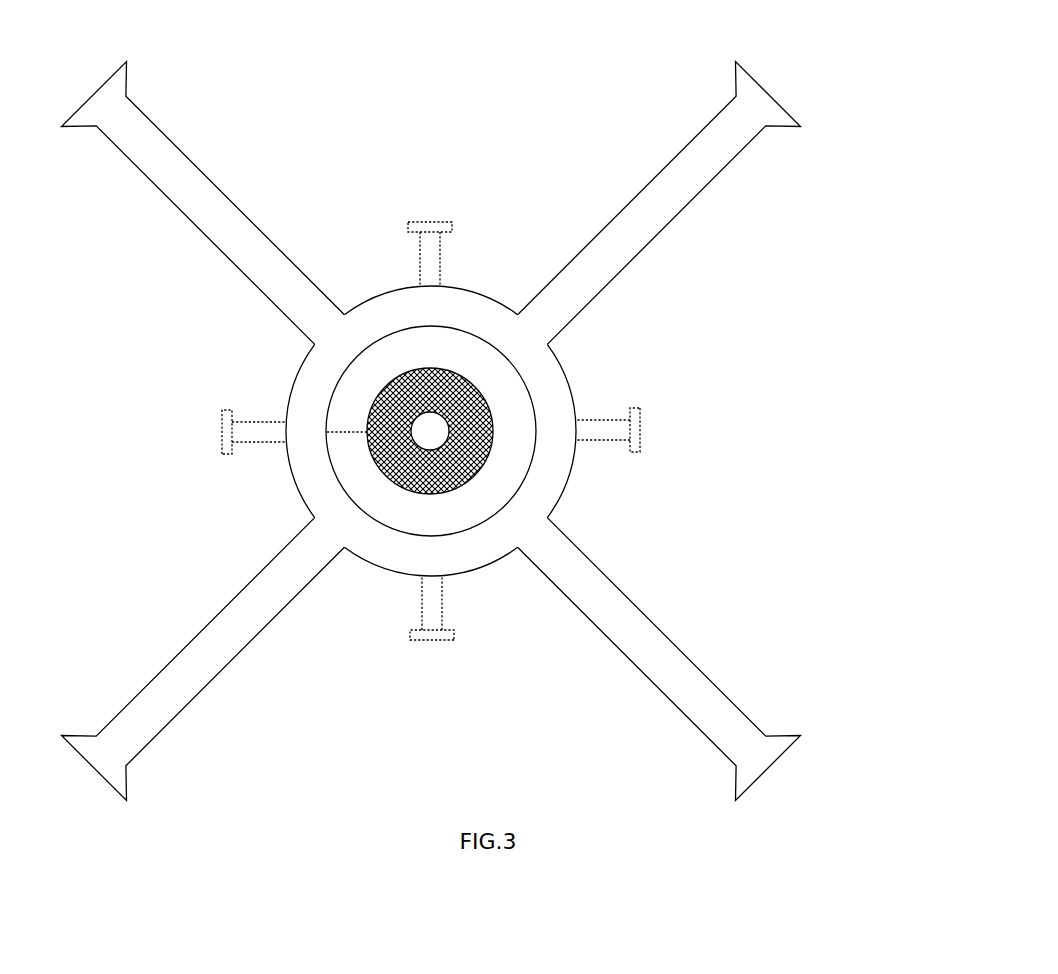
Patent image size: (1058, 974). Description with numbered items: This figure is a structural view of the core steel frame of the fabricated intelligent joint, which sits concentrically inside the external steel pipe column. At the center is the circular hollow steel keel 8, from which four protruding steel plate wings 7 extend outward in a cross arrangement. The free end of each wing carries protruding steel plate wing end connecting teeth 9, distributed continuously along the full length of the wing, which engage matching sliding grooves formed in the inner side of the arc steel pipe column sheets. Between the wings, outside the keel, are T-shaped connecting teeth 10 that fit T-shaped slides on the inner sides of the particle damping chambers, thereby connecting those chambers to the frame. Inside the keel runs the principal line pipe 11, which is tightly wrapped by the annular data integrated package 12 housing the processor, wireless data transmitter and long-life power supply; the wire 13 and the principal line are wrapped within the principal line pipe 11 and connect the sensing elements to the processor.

The protruding steel plate wing 7 is at (665, 200).
The circular hollow steel keel 8 is at (312, 490).
The protruding steel plate wing end connecting tooth 9 is at (768, 748).
The T-shaped connecting tooth 10 is at (613, 430).
The principal line pipe 11 is at (415, 413).
The annular data integrated package 12 is at (458, 400).
The wire 13 is at (353, 430).